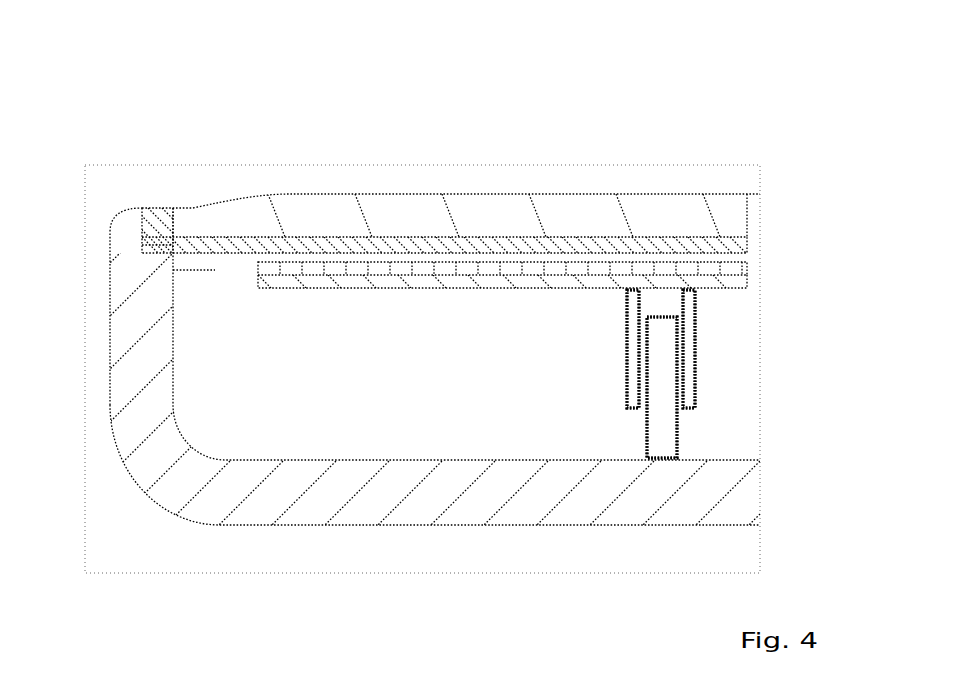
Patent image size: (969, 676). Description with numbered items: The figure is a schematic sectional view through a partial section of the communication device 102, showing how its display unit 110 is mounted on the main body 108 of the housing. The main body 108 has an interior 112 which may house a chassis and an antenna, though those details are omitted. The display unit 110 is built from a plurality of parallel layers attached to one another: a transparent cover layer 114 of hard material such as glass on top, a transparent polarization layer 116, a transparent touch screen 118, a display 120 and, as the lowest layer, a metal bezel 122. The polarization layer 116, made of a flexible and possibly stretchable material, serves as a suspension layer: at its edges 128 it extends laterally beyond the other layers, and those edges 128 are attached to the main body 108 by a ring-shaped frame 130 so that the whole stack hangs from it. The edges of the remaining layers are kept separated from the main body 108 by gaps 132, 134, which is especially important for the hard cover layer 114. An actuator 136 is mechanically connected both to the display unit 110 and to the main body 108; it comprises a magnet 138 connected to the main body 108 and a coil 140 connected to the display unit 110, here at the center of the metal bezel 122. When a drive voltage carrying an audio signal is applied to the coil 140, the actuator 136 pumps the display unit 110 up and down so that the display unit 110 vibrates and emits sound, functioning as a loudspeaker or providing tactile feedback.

The communication device 102 is at (695, 131).
The main body 108 is at (282, 497).
The display unit 110 is at (355, 188).
The interior 112 is at (310, 390).
The transparent cover layer 114 is at (733, 212).
The polarization layer 116 is at (748, 247).
The touch screen 118 is at (748, 253).
The display 120 is at (748, 267).
The metal bezel 122 is at (750, 286).
The edges 128 is at (147, 244).
The ring-shaped frame 130 is at (157, 208).
The gap 132 is at (193, 208).
The gap 134 is at (215, 277).
The actuator 136 is at (727, 378).
The magnet 138 is at (676, 437).
The coil 140 is at (685, 300).